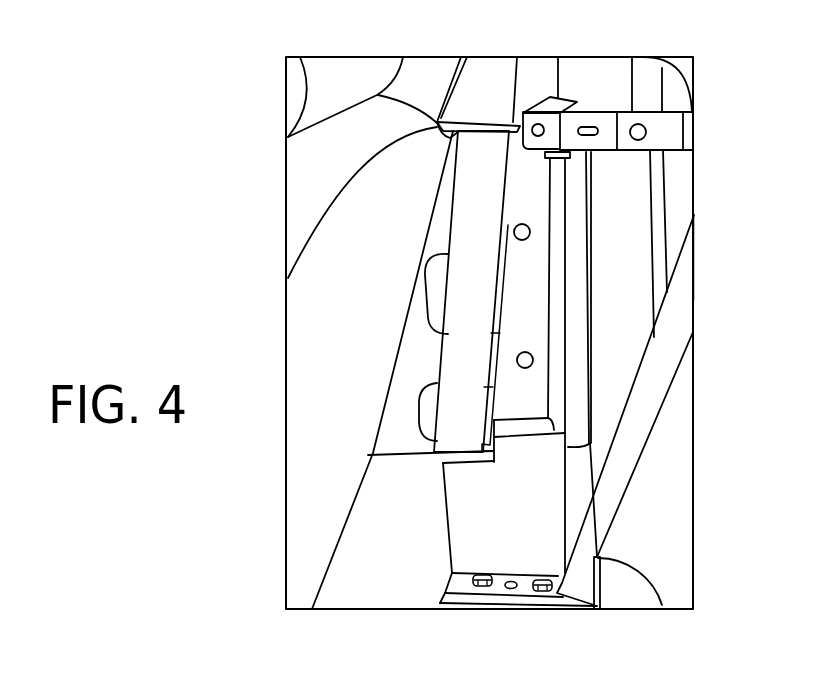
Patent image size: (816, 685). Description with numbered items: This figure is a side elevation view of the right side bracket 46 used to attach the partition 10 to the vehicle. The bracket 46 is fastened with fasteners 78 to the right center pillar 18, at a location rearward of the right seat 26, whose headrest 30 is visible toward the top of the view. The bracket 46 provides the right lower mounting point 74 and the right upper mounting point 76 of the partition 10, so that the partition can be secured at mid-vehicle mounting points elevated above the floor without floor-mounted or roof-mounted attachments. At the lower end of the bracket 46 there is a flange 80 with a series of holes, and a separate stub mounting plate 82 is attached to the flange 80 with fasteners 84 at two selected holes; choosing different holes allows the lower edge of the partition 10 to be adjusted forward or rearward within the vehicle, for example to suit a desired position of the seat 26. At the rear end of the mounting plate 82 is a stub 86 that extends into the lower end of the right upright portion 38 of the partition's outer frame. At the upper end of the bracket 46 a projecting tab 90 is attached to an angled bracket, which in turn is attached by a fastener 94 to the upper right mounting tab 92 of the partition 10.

The partition 10 is at (668, 443).
The right center pillar 18 is at (412, 382).
The right seat 26 is at (318, 184).
The headrest 30 is at (347, 77).
The right upright portion 38 is at (650, 338).
The right side bracket 46 is at (530, 286).
The right lower mounting point 74 is at (566, 610).
The right upper mounting point 76 is at (620, 110).
The fasteners 78 is at (530, 232).
The flange 80 is at (442, 585).
The stub mounting plate 82 is at (516, 598).
The fasteners 84 is at (480, 590).
The stub 86 is at (662, 605).
The projecting tab 90 is at (600, 110).
The upper right mounting tab 92 is at (647, 112).
The fastener 94 is at (637, 141).